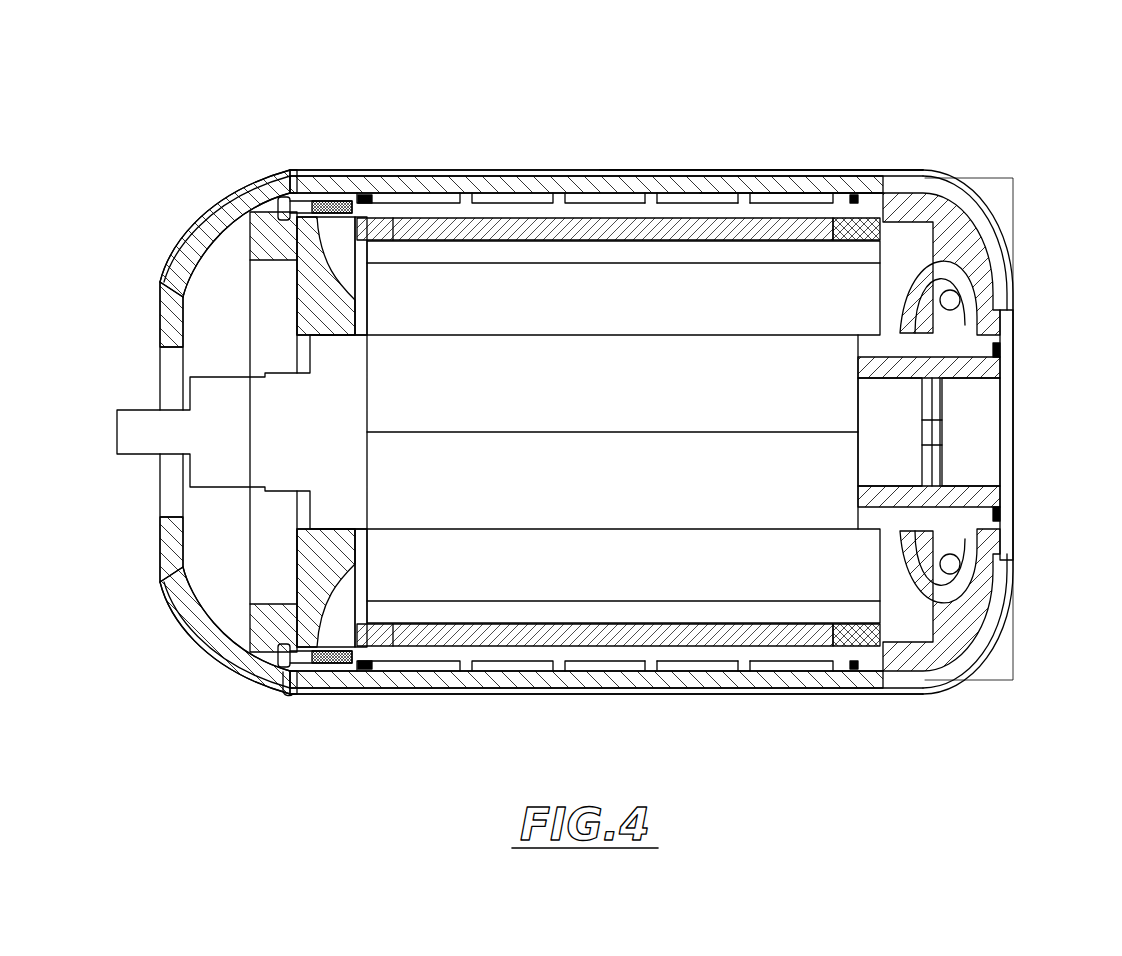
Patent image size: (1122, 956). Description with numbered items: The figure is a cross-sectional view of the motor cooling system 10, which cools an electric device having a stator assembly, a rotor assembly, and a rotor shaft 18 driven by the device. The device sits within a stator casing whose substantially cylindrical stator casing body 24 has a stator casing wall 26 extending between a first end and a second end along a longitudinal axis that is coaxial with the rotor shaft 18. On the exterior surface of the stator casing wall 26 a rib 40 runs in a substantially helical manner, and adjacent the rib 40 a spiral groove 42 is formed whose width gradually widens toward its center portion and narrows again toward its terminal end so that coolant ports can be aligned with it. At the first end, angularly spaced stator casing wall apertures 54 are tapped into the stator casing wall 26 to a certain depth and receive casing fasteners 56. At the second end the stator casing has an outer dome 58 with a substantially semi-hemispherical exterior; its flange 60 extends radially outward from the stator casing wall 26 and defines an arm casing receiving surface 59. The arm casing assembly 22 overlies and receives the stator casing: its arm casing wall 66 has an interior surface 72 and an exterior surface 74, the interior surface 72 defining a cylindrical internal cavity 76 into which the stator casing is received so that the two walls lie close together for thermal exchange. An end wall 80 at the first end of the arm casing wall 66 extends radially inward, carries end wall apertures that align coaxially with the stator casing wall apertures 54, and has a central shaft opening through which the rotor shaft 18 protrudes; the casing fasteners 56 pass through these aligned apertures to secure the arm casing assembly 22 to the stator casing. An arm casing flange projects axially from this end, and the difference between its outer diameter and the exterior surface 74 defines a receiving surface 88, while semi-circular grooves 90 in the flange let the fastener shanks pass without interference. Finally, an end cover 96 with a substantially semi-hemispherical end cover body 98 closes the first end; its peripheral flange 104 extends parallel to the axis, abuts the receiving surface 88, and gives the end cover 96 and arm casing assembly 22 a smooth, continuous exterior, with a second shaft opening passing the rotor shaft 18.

The motor cooling system 10 is at (967, 98).
The rotor shaft 18 is at (140, 400).
The arm casing assembly 22 is at (418, 155).
The stator casing body 24 is at (290, 182).
The stator casing wall 26 is at (750, 212).
The rib 40 is at (745, 665).
The spiral groove 42 is at (688, 668).
The stator casing wall apertures 54 is at (350, 672).
The casing fasteners 56 is at (330, 668).
The outer dome 58 is at (988, 258).
The arm casing receiving surface 59 is at (897, 184).
The flange 60 is at (888, 187).
The arm casing wall 66 is at (783, 186).
The interior surface 72 is at (642, 205).
The exterior surface 74 is at (800, 165).
The internal cavity 76 is at (768, 610).
The end wall 80 is at (305, 575).
The receiving surface 88 is at (306, 183).
The semi-circular grooves 90 is at (260, 652).
The end cover 96 is at (190, 253).
The end cover body 98 is at (190, 612).
The peripheral flange 104 is at (282, 682).